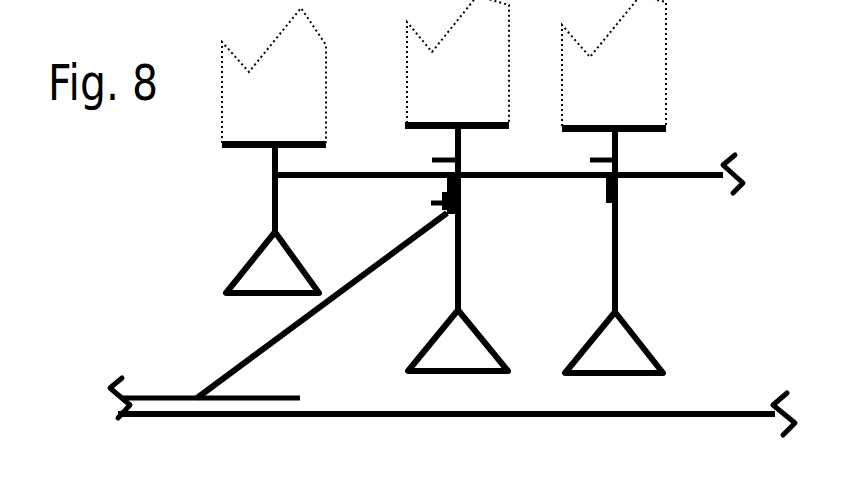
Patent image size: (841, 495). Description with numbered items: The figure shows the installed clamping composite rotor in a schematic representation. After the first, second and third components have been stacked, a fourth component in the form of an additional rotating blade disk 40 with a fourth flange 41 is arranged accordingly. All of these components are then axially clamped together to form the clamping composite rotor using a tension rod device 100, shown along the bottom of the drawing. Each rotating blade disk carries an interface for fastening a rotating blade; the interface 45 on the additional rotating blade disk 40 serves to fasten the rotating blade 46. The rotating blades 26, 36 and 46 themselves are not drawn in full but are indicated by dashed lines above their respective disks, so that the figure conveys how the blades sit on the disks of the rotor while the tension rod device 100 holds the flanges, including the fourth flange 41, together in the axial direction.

The rotating blade 26 is at (290, 118).
The rotating blade 36 is at (474, 101).
The rotating blade 46 is at (614, 64).
The interface 45 is at (648, 85).
The fourth flange 41 is at (618, 192).
The rotating blade disk 40 is at (620, 312).
The tension rod device 100 is at (663, 413).